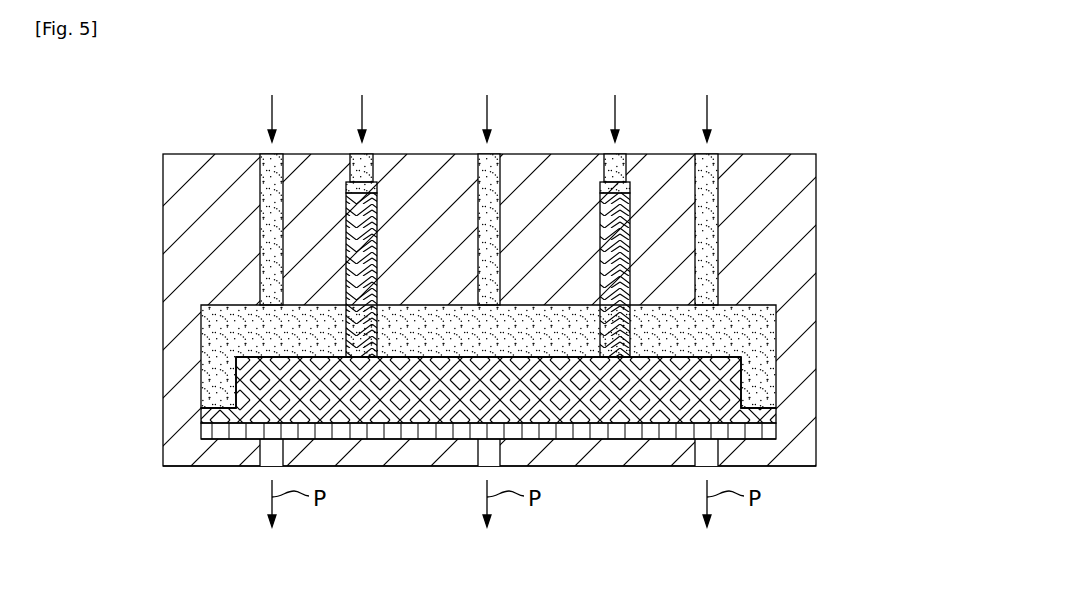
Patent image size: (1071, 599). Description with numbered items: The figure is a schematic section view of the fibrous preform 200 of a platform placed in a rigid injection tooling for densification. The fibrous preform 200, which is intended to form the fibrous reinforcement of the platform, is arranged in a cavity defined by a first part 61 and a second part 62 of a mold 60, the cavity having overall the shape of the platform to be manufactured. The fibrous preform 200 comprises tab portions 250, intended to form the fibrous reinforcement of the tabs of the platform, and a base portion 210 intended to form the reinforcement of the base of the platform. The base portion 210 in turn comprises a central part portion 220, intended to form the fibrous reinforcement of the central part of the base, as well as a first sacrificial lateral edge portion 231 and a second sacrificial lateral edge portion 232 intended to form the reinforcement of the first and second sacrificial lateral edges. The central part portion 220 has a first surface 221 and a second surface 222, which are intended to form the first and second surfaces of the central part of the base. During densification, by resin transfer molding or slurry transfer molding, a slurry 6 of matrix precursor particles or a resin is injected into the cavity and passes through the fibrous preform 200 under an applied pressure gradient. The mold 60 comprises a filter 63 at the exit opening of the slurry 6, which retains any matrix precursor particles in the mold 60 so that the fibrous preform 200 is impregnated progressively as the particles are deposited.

The slurry 6 is at (284, 171).
The mold 60 is at (535, 337).
The first part of the mold 61 is at (802, 373).
The second part of the mold 62 is at (798, 273).
The filter 63 is at (245, 430).
The fibrous preform 200 is at (497, 381).
The base portion 210 is at (733, 370).
The central part portion 220 is at (383, 412).
The first surface 221 is at (558, 425).
The second surface 222 is at (452, 360).
The first sacrificial lateral edge portion 231 is at (203, 415).
The second sacrificial lateral edge portion 232 is at (757, 416).
The tab portions 250 is at (364, 243).